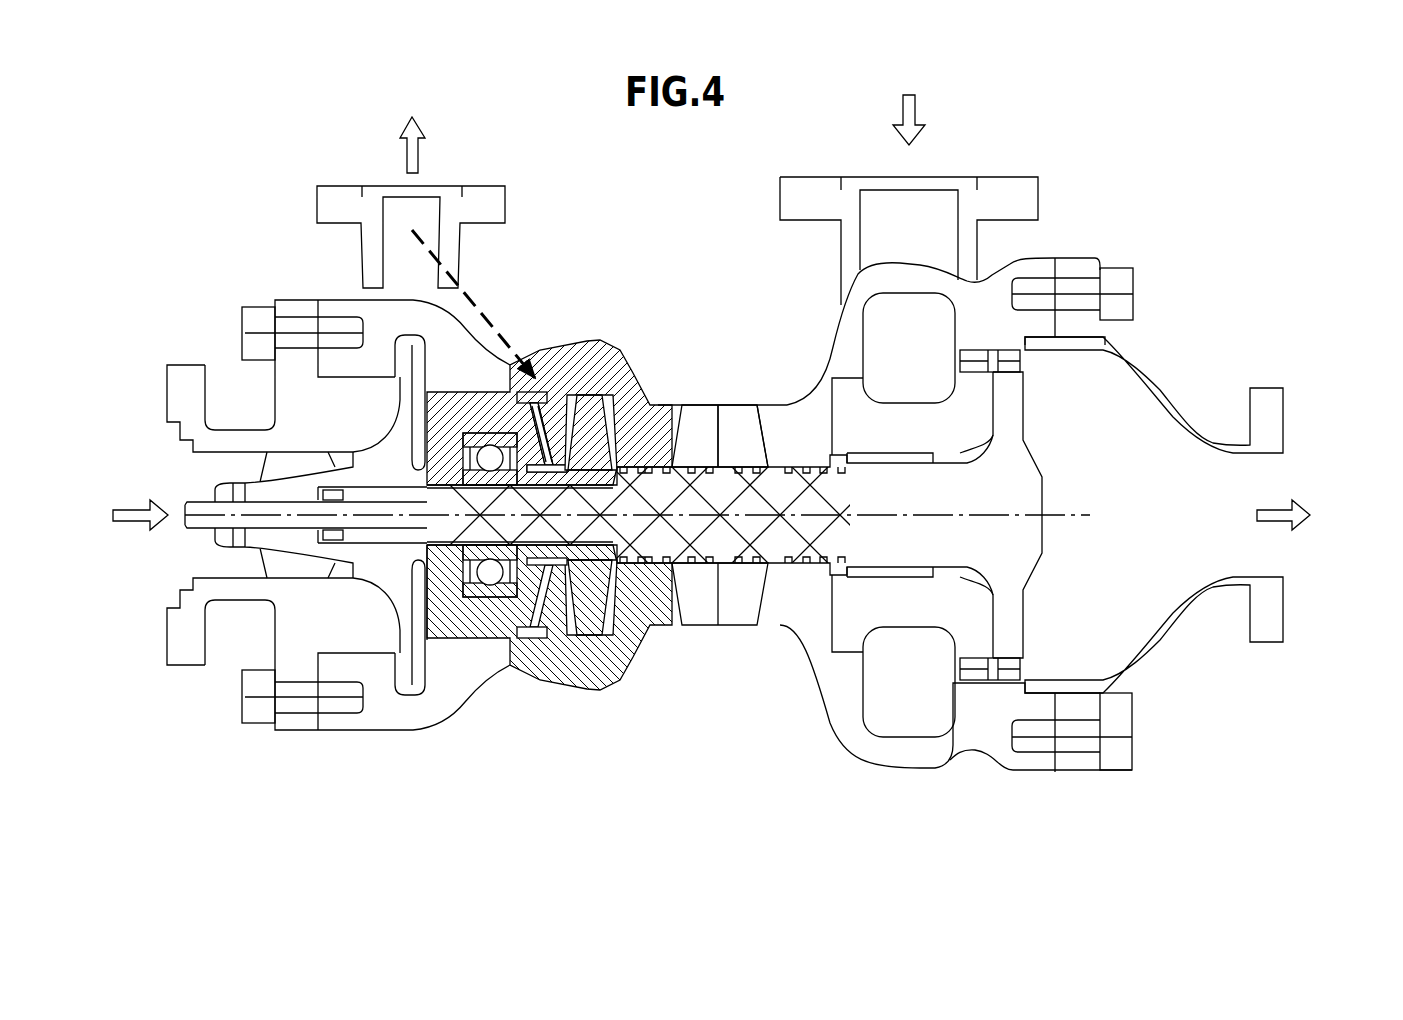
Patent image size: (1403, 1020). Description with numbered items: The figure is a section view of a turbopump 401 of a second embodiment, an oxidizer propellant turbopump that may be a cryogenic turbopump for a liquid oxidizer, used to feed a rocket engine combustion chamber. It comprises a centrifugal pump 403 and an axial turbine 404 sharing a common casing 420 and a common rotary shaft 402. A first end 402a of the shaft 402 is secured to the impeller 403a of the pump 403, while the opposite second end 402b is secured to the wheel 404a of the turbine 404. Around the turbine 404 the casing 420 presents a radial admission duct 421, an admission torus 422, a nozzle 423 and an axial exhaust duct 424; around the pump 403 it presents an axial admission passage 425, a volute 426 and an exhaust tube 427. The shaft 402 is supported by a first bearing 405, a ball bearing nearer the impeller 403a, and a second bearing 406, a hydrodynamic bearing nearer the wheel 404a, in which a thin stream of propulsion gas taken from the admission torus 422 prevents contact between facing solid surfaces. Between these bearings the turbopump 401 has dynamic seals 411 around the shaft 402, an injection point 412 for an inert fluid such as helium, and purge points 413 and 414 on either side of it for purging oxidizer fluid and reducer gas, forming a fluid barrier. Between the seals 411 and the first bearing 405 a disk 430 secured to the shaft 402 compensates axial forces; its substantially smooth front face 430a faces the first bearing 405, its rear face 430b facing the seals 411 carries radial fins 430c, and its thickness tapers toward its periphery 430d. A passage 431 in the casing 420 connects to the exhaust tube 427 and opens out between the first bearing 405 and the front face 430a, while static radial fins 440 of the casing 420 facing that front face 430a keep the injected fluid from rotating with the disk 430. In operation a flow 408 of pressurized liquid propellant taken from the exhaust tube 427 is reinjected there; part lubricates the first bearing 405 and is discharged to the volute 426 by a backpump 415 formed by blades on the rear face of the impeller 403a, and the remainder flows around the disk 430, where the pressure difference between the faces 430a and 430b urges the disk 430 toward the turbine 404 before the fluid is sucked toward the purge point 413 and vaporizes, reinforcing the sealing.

The turbopump 401 is at (205, 707).
The rotary shaft 402 is at (737, 568).
The first end of the shaft 402a is at (388, 560).
The second end of the shaft 402b is at (993, 542).
The centrifugal pump 403 is at (308, 384).
The impeller 403a is at (413, 398).
The axial turbine 404 is at (971, 315).
The wheel 404a is at (1032, 360).
The first bearing 405 is at (488, 432).
The second bearing 406 is at (912, 574).
The flow of liquid propellant 408 is at (482, 310).
The dynamic seals 411 is at (648, 480).
The injection point 412 is at (722, 420).
The purge point 413 is at (682, 417).
The purge point 414 is at (762, 422).
The backpump 415 is at (423, 640).
The casing 420 is at (815, 352).
The radial admission duct 421 is at (920, 198).
The admission torus 422 is at (918, 712).
The nozzle 423 is at (955, 357).
The axial exhaust duct 424 is at (1282, 479).
The axial admission passage 425 is at (200, 471).
The volute 426 is at (406, 675).
The exhaust tube 427 is at (427, 220).
The disk 430 is at (600, 343).
The front face 430a is at (531, 394).
The rear face 430b is at (632, 380).
The radial fins 430c is at (597, 607).
The periphery 430d is at (593, 630).
The passage 431 is at (518, 636).
The radial fins 440 is at (549, 620).